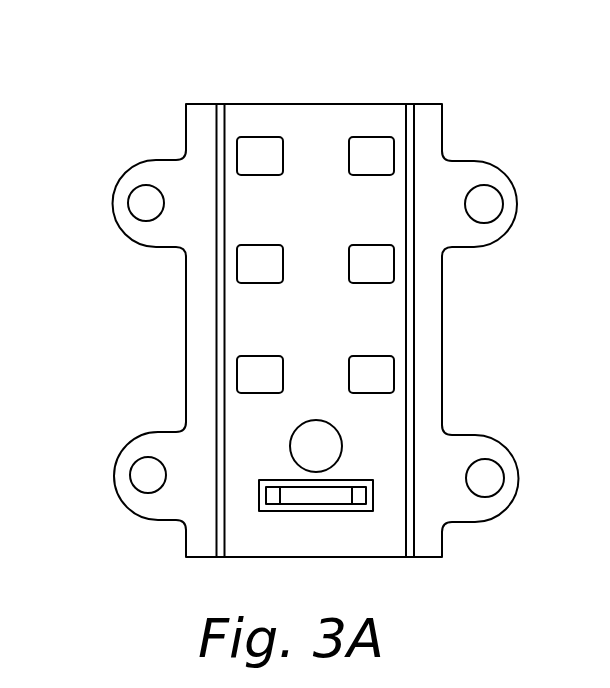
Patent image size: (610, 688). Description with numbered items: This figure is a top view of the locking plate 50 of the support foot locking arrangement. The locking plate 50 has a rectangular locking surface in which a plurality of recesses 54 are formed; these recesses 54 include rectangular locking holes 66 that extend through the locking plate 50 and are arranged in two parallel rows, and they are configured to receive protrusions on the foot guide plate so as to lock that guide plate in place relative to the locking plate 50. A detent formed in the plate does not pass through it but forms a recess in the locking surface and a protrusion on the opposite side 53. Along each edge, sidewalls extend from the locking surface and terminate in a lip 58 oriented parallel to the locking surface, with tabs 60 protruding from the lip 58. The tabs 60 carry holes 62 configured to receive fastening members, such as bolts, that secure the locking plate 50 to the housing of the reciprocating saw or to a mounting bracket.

The locking plate 50 is at (140, 118).
The opposite side of the locking surface 53 is at (321, 122).
The recesses 54 is at (331, 444).
The lip 58 is at (197, 351).
The tabs 60 is at (116, 189).
The holes 62 is at (490, 206).
The rectangular locking holes 66 is at (373, 252).